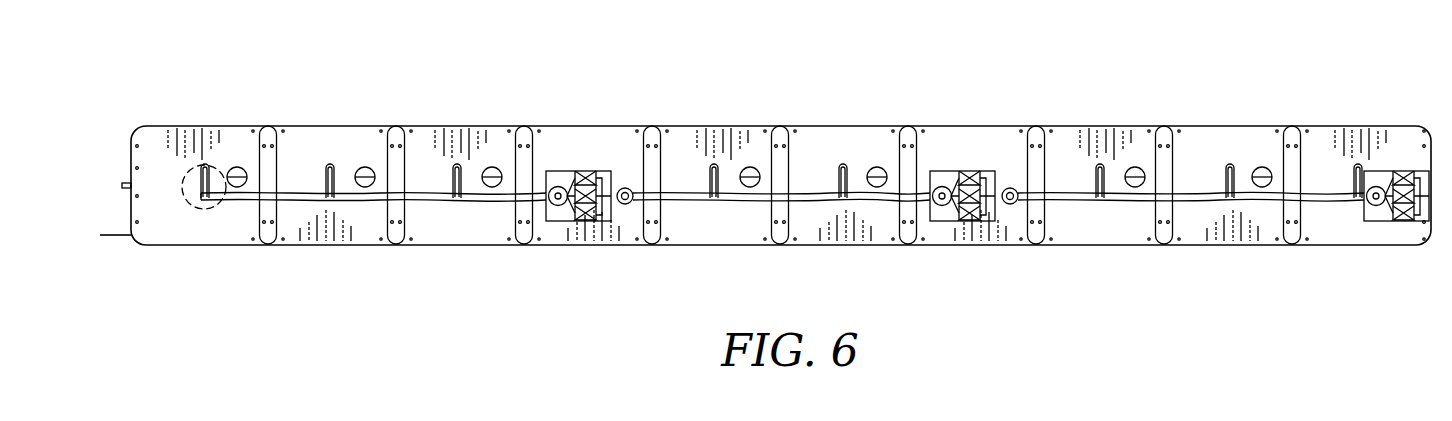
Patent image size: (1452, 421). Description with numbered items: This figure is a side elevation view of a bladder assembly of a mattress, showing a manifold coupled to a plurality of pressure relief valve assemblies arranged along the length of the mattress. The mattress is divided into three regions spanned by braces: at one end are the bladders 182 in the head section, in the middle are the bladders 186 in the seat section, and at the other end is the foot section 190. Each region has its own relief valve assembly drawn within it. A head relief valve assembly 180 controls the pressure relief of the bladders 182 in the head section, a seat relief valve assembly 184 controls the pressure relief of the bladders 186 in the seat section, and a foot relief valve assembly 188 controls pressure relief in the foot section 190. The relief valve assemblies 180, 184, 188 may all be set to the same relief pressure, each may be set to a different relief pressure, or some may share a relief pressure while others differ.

The foot section 190 is at (608, 100).
The bladders in a seat section 186 is at (990, 100).
The bladders in a head section 182 is at (995, 100).
The foot relief valve assembly 188 is at (566, 222).
The seat relief valve assembly 184 is at (951, 222).
The head relief valve assembly 180 is at (1380, 222).